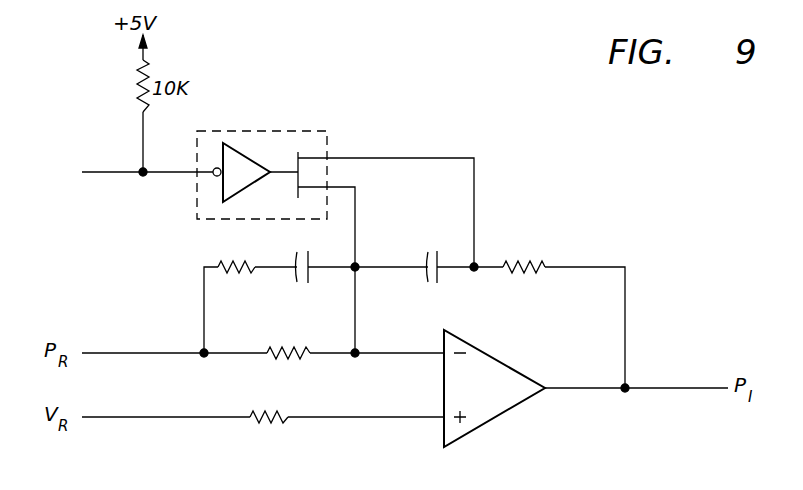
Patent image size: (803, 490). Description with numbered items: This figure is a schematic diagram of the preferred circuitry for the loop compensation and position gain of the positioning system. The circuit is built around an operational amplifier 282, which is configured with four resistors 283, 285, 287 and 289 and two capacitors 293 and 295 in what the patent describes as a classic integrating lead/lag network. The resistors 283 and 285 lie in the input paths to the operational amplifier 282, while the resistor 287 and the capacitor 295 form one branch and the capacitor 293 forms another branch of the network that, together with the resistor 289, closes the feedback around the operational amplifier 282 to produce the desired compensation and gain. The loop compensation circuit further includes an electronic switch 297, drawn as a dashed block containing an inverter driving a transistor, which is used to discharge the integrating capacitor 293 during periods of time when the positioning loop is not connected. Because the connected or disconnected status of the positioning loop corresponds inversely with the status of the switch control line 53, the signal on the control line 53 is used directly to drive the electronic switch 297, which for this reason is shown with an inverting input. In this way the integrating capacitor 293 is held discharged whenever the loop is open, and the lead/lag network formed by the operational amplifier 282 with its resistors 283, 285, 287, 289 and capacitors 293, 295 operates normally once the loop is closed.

The switch control line 53 is at (124, 172).
The electronic switch 297 is at (245, 131).
The resistor 287 is at (237, 262).
The capacitor 295 is at (330, 235).
The integrating capacitor 293 is at (449, 218).
The resistor 289 is at (522, 262).
The resistor 285 is at (290, 359).
The resistor 283 is at (270, 422).
The operational amplifier 282 is at (488, 421).